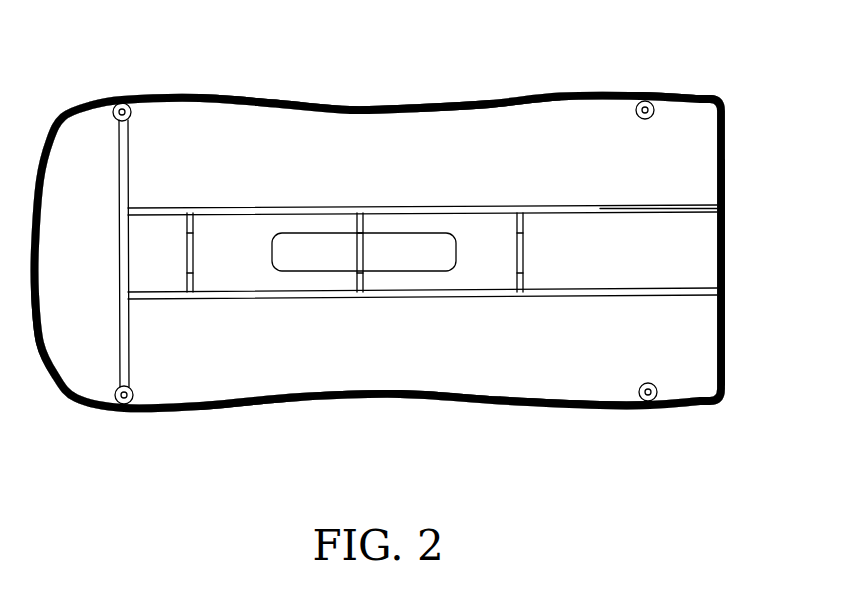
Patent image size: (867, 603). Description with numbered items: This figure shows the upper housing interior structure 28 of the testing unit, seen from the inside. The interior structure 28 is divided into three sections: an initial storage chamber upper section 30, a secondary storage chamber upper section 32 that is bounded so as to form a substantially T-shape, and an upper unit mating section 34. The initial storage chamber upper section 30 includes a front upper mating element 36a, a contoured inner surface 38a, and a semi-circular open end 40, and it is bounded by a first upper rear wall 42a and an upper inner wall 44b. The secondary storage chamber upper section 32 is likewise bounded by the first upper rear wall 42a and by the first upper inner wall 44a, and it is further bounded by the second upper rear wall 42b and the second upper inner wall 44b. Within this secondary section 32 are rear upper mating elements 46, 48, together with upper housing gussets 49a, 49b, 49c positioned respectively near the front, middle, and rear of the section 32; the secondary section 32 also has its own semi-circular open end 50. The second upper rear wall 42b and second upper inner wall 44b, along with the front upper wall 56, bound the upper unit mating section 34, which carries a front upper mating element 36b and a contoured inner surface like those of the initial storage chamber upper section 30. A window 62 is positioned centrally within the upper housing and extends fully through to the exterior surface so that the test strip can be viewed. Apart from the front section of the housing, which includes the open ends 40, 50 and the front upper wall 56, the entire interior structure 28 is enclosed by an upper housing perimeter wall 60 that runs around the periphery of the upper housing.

The upper housing interior structure 28 is at (548, 88).
The initial storage chamber upper section 30 is at (308, 358).
The secondary storage chamber upper section 32 is at (690, 222).
The upper unit mating section 34 is at (350, 133).
The front upper mating element 36a is at (657, 392).
The front upper mating element 36b is at (645, 101).
The contoured inner surface 38a is at (242, 373).
The semi-circular open end 40 is at (725, 333).
The first upper rear wall 42a is at (130, 362).
The second upper rear wall 42b is at (131, 156).
The first upper inner wall 44a is at (472, 296).
The second upper inner wall 44b is at (240, 206).
The rear upper mating element 46 is at (76, 400).
The rear upper mating element 48 is at (121, 101).
The upper housing gusset 49a is at (523, 282).
The upper housing gusset 49b is at (357, 282).
The upper housing gusset 49c is at (190, 282).
The semi-circular open end 50 is at (725, 247).
The front upper wall 56 is at (725, 137).
The upper housing perimeter wall 60 is at (472, 104).
The window 62 is at (400, 272).